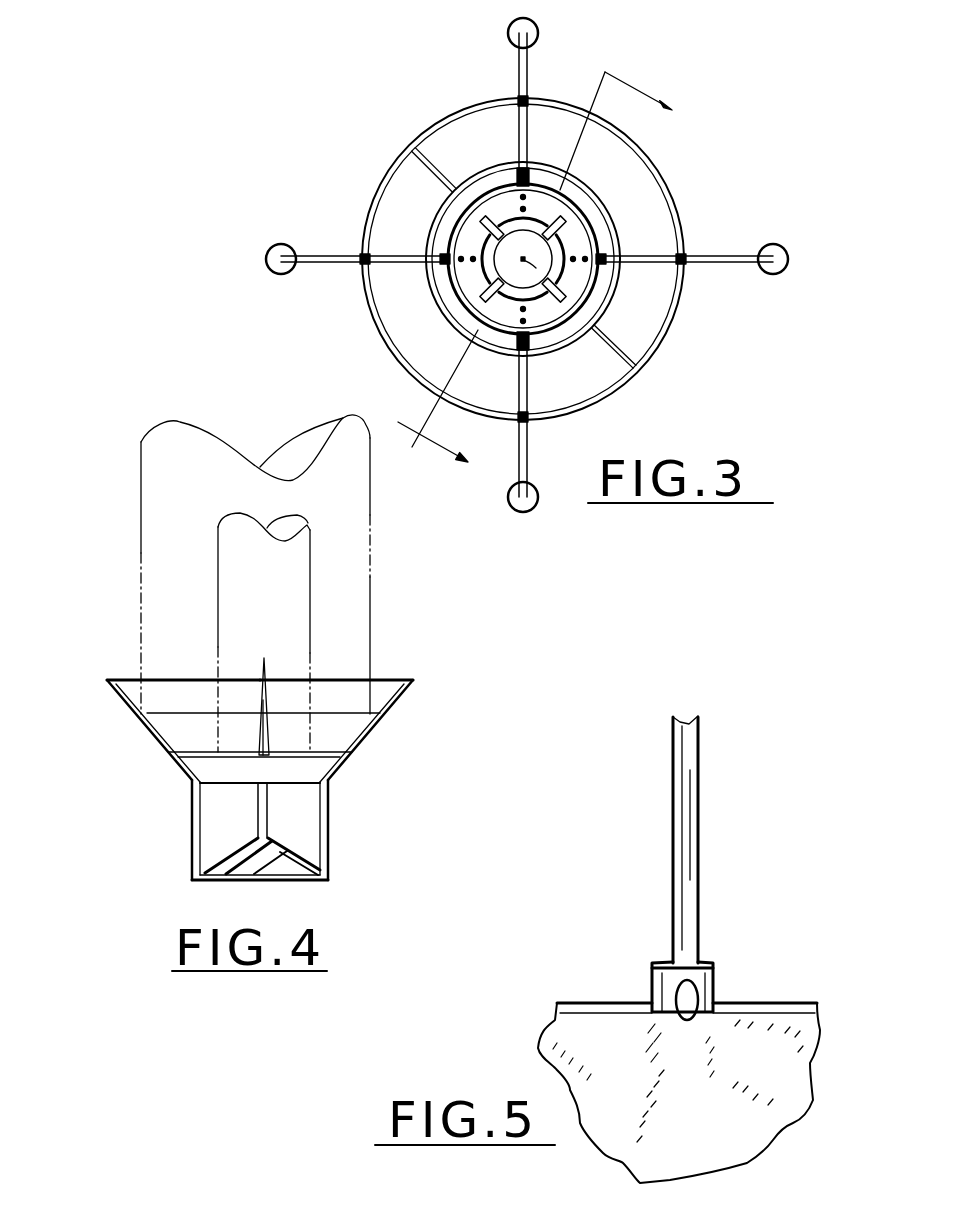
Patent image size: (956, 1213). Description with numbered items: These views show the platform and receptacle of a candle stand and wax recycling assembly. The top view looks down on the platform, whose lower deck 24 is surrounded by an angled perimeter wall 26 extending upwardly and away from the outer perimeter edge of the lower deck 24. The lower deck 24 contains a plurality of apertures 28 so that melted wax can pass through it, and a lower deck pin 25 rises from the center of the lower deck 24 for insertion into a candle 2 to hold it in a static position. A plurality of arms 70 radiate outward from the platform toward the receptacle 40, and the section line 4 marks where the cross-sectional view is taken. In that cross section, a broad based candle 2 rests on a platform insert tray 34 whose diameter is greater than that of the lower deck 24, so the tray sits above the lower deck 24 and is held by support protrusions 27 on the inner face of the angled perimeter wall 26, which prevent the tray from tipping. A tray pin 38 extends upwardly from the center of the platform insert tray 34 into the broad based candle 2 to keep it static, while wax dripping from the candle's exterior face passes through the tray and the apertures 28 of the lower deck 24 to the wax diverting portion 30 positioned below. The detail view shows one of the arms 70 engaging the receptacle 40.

In FIG. 4, the candle 2 is at (239, 583).
In FIG. 3, the section line 4- 4 is at (546, 284).
In FIG. 3, the lower deck 24 is at (630, 259).
In FIG. 4, the lower deck 24 is at (299, 825).
In FIG. 3, the lower deck pin 25 is at (606, 262).
In FIG. 4, the lower deck pin 25 is at (205, 748).
In FIG. 3, the angled perimeter wall 26 is at (433, 259).
In FIG. 4, the angled perimeter wall 26 is at (210, 685).
In FIG. 3, the support protrusions 27 is at (594, 291).
In FIG. 4, the support protrusions 27 is at (292, 731).
In FIG. 3, the apertures 28 is at (428, 270).
In FIG. 4, the apertures 28 is at (186, 835).
In FIG. 4, the wax diverting portion 30 is at (292, 868).
In FIG. 4, the platform insert tray 34 is at (370, 676).
In FIG. 4, the tray pin 38 is at (340, 684).
In FIG. 3, the receptacle 40 is at (563, 259).
In FIG. 5, the receptacle 40 is at (718, 1091).
In FIG. 3, the arms 70 is at (527, 265).
In FIG. 5, the arms 70 is at (719, 868).